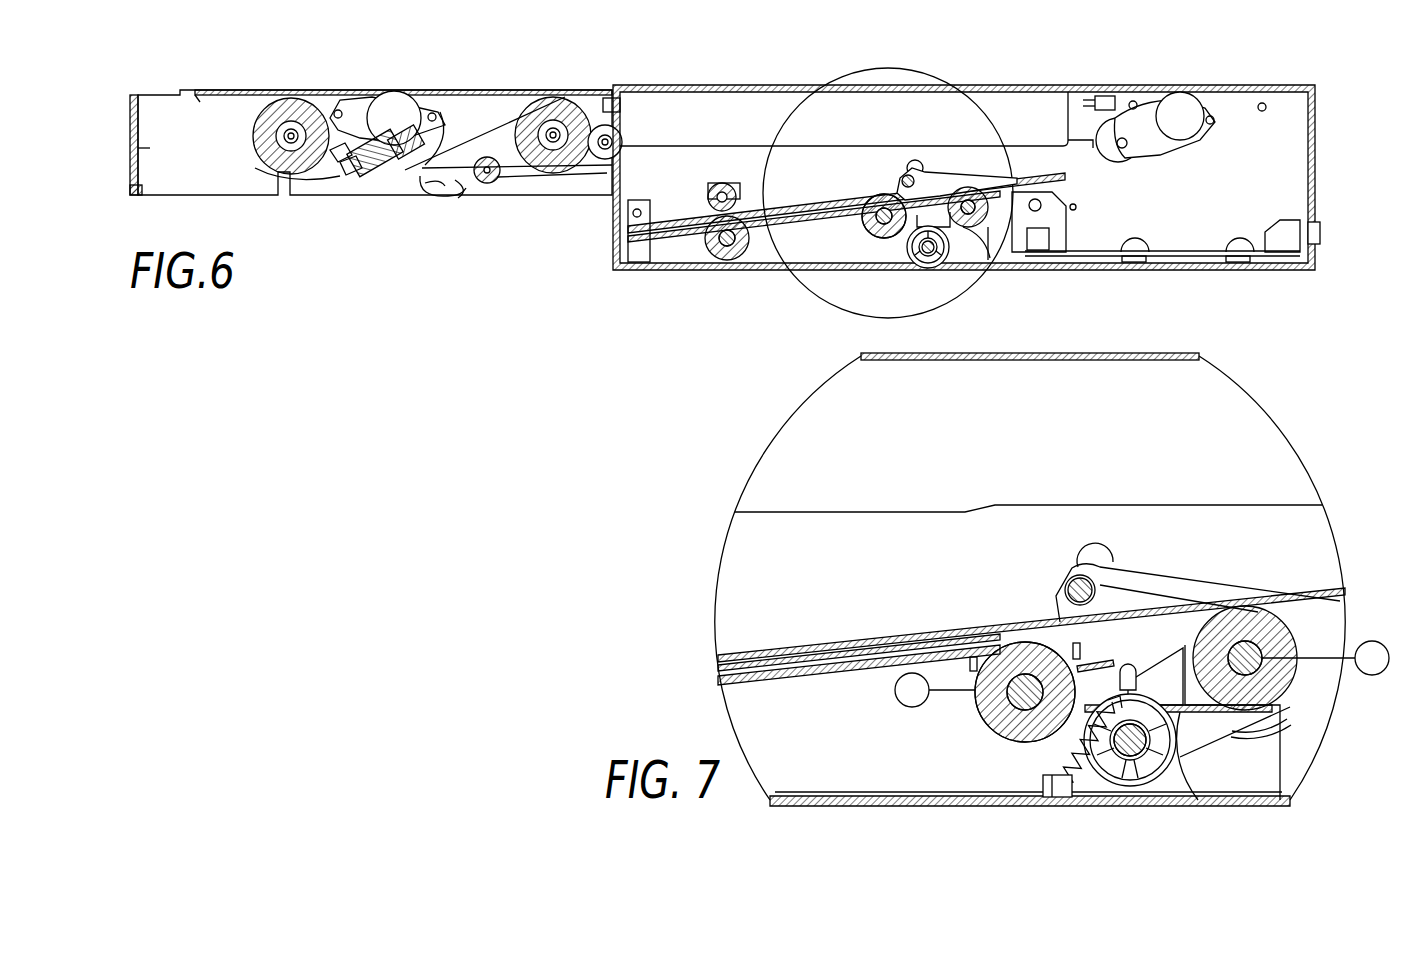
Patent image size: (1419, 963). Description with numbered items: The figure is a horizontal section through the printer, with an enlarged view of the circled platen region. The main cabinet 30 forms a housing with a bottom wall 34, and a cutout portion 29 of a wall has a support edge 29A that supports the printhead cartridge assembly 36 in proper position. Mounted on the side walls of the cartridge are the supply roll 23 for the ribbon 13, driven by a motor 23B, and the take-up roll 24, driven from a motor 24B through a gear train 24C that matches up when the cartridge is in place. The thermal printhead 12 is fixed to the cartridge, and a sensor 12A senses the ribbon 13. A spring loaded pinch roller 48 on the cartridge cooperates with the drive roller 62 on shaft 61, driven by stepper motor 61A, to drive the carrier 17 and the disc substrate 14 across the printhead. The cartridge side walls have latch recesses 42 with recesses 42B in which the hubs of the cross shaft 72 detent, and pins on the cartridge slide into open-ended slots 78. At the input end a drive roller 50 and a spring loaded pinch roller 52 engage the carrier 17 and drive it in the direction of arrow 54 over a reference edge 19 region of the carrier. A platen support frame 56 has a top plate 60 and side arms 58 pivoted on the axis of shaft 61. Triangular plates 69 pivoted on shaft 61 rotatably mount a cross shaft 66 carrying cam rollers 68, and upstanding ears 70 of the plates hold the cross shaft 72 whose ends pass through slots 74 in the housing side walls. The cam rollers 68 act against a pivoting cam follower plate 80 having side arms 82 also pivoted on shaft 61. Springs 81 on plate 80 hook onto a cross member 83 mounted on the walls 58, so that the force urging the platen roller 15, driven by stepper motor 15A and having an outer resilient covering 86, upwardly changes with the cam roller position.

In FIG. 6, the printhead 12 is at (365, 168).
In FIG. 6, the sensor 12A is at (432, 152).
In FIG. 6, the ribbon 13 is at (508, 118).
In FIG. 7, the substrate 14 is at (858, 665).
In FIG. 6, the platen roller 15 is at (884, 238).
In FIG. 7, the platen roller 15 is at (982, 697).
In FIG. 7, the stepper motor 15A is at (898, 702).
In FIG. 6, the carrier 17 is at (680, 225).
In FIG. 7, the carrier 17 is at (772, 650).
In FIG. 6, the reference edge 19 is at (207, 90).
In FIG. 6, the supply roll 23 is at (298, 105).
In FIG. 6, the motor 23B is at (396, 105).
In FIG. 6, the take-up roll 24 is at (555, 98).
In FIG. 6, the motor 24B is at (1182, 112).
In FIG. 6, the gear train 24C is at (1135, 162).
In FIG. 6, the cutout portion 29 is at (1012, 100).
In FIG. 6, the support edge 29A is at (1032, 135).
In FIG. 6, the main cabinet 30 is at (1228, 270).
In FIG. 6, the bottom wall 34 is at (1013, 268).
In FIG. 6, the printhead cartridge assembly 36 is at (233, 78).
In FIG. 6, the latch recess 42 is at (470, 192).
In FIG. 6, the recess 42B is at (425, 188).
In FIG. 6, the pinch roller 48 is at (493, 180).
In FIG. 6, the drive roller 50 is at (735, 252).
In FIG. 6, the pinch roller 52 is at (722, 192).
In FIG. 6, the arrow 54 is at (790, 185).
In FIG. 7, the platen support frame 56 is at (830, 762).
In FIG. 6, the side arms 58 is at (678, 263).
In FIG. 7, the side arms 58 is at (932, 778).
In FIG. 7, the top plate 60 is at (762, 687).
In FIG. 7, the shaft 61 is at (1262, 670).
In FIG. 7, the stepper motor 61A is at (1370, 640).
In FIG. 6, the drive roller 62 is at (990, 210).
In FIG. 7, the drive roller 62 is at (1283, 692).
In FIG. 7, the cross shaft 66 is at (1128, 758).
In FIG. 6, the cam rollers 68 is at (948, 256).
In FIG. 7, the cam rollers 68 is at (1170, 778).
In FIG. 7, the triangular plates 69 is at (1268, 740).
In FIG. 6, the upstanding ears 70 is at (932, 185).
In FIG. 7, the upstanding ears 70 is at (1125, 590).
In FIG. 7, the cross shaft 72 is at (1073, 578).
In FIG. 6, the slots 74 is at (916, 160).
In FIG. 7, the slots 74 is at (1098, 548).
In FIG. 6, the open-ended slots 78 is at (1098, 162).
In FIG. 7, the cam follower plate 80 is at (1210, 722).
In FIG. 7, the springs 81 is at (1060, 748).
In FIG. 7, the side arms 82 is at (1163, 680).
In FIG. 7, the cross member 83 is at (1035, 782).
In FIG. 6, the outer resilient covering 86 is at (870, 228).
In FIG. 7, the outer resilient covering 86 is at (1005, 655).